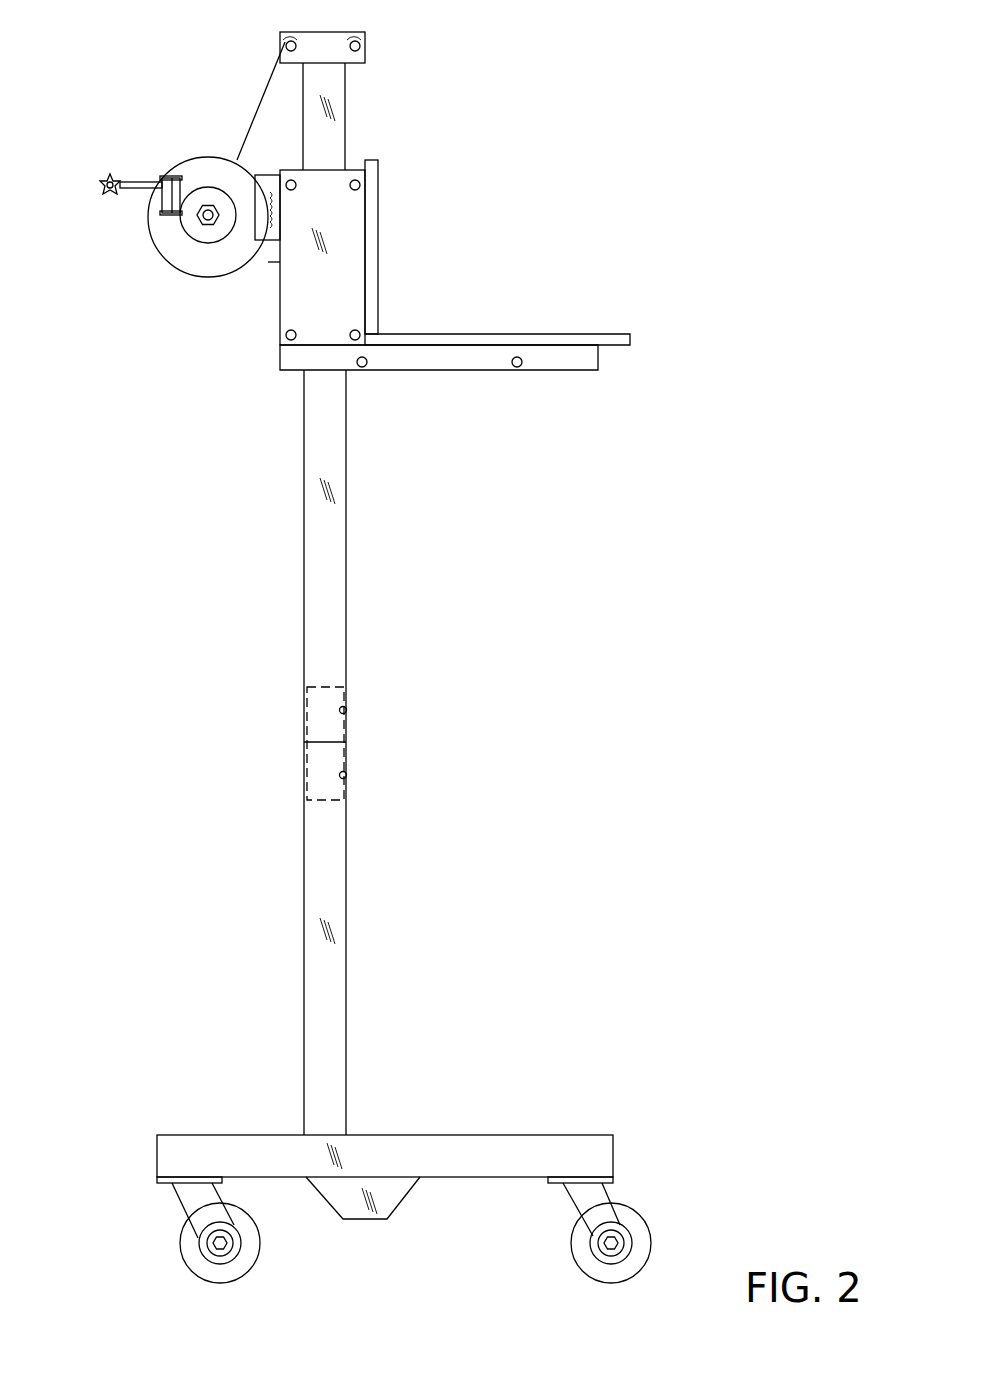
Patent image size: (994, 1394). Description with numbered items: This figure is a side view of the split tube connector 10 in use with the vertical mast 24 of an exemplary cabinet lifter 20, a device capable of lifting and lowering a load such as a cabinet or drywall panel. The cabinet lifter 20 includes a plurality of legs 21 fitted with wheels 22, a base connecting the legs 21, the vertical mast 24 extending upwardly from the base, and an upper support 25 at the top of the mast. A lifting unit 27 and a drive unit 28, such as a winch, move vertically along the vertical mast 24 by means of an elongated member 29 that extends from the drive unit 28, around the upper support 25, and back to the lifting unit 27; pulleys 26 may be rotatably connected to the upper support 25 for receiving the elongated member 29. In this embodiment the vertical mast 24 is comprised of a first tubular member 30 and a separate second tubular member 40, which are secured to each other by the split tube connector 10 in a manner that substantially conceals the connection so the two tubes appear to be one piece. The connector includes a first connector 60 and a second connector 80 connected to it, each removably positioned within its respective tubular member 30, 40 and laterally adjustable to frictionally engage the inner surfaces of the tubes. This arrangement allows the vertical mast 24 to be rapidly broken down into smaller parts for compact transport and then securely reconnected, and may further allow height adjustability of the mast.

The split tube connector 10 is at (470, 740).
The cabinet lifter 20 is at (160, 500).
The legs 21 is at (457, 1150).
The wheels 22 is at (250, 1241).
The vertical mast 24 is at (347, 622).
The upper support 25 is at (327, 32).
The pulleys 26 is at (362, 40).
The lifting unit 27 is at (512, 252).
The drive unit 28 is at (145, 295).
The elongated member 29 is at (255, 100).
The first tubular member 30 is at (346, 682).
The second tubular member 40 is at (305, 870).
The first connector 60 is at (307, 718).
The second connector 80 is at (345, 787).